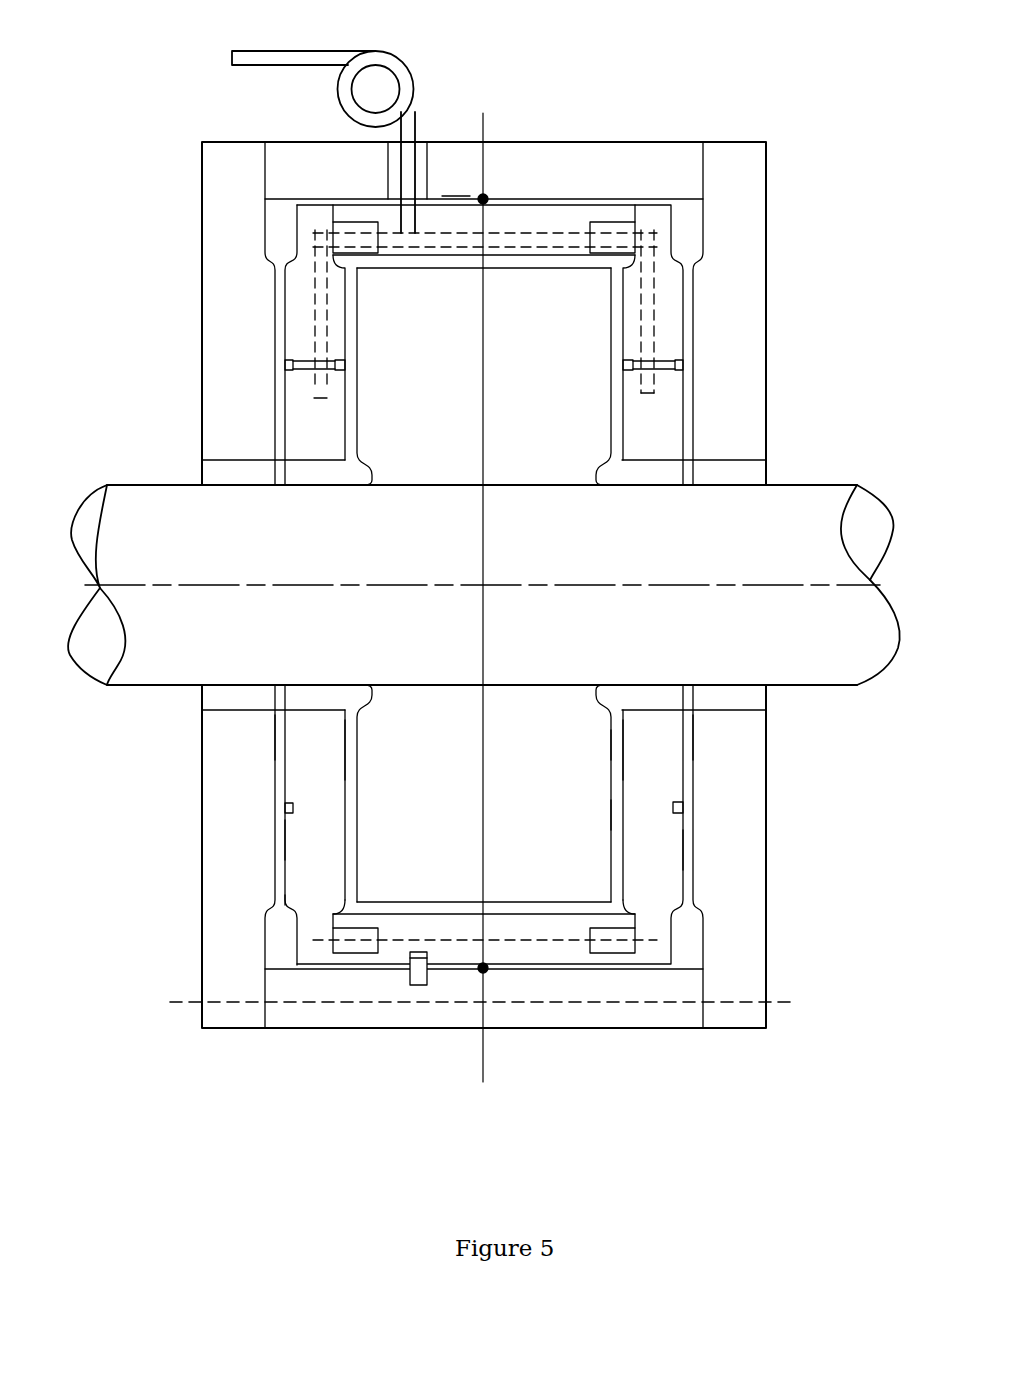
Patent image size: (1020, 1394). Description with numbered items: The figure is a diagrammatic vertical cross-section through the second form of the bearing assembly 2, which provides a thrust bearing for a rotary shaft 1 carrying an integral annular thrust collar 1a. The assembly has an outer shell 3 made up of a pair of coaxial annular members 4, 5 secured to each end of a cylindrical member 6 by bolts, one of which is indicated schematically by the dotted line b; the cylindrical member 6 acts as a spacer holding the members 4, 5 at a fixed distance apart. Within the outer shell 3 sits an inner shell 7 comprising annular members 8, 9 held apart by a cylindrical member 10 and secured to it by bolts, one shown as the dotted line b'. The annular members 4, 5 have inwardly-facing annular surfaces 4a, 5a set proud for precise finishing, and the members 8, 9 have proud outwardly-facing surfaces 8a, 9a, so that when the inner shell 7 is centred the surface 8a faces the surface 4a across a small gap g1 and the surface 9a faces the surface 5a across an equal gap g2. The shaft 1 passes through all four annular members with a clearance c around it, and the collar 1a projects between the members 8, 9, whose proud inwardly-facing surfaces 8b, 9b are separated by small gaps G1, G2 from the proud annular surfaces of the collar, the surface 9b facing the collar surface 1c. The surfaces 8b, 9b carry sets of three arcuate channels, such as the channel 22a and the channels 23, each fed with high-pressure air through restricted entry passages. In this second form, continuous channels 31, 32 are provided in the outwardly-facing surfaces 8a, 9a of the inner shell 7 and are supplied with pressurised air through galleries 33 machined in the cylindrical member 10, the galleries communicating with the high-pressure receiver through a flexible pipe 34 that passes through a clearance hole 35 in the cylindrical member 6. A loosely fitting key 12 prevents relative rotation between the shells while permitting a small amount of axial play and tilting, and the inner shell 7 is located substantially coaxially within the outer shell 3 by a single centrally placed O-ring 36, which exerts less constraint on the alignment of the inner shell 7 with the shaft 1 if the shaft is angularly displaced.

The rotary shaft 1 is at (836, 688).
The thrust collar 1a is at (537, 787).
The annular surface of the collar 1c is at (608, 815).
The bearing assembly 2 is at (772, 160).
The outer shell 3 is at (200, 379).
The annular member 4 is at (222, 430).
The inwardly-facing annular surface 4a is at (278, 772).
The annular member 5 is at (718, 140).
The inwardly-facing annular surface 5a is at (692, 777).
The cylindrical member 6 is at (633, 1015).
The inner shell 7 is at (290, 909).
The annular member 8 is at (335, 807).
The outwardly-facing annular surface 8a is at (287, 835).
The inwardly-facing annular surface 8b is at (345, 772).
The annular member 9 is at (643, 723).
The outwardly-facing annular surface 9a is at (684, 855).
The inwardly-facing annular surface 9b is at (622, 743).
The cylindrical member 10 is at (358, 847).
The key 12 is at (415, 977).
The arcuate channel 22a is at (346, 365).
The arcuate channels 23 is at (622, 366).
The continuous channel 31 is at (285, 363).
The continuous channel 32 is at (685, 362).
The galleries 33 is at (608, 222).
The flexible pipe 34 is at (400, 57).
The clearance hole 35 is at (442, 198).
The O-ring 36 is at (486, 197).
The gap G1 is at (353, 750).
The gap G2 is at (617, 747).
The gap g1 is at (278, 728).
The gap g2 is at (688, 728).
The bolt b is at (492, 993).
The bolt b' is at (734, 921).
The clearance c is at (222, 473).